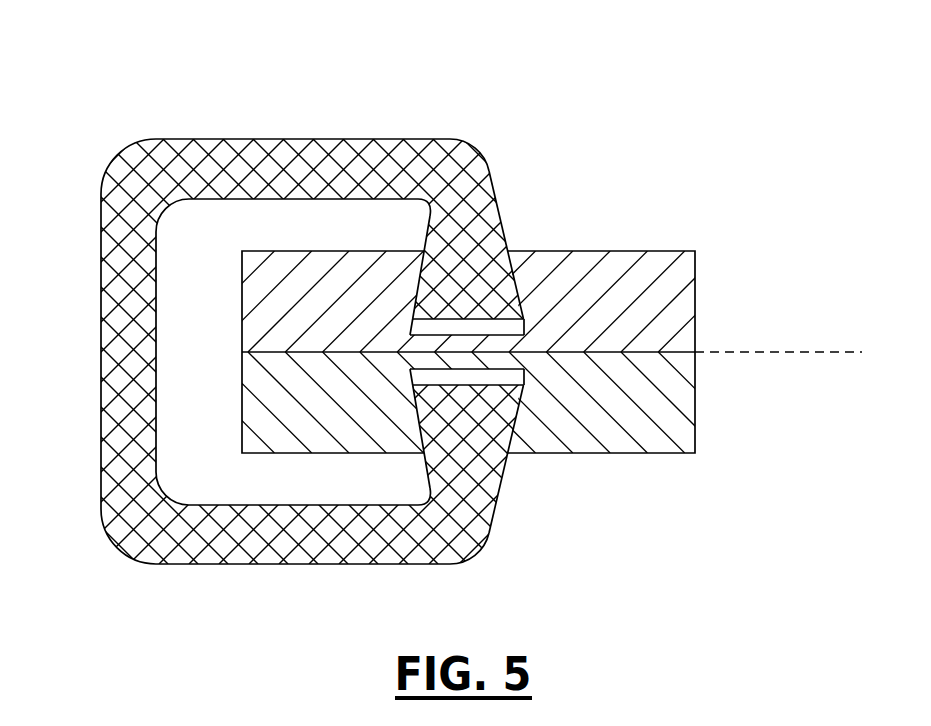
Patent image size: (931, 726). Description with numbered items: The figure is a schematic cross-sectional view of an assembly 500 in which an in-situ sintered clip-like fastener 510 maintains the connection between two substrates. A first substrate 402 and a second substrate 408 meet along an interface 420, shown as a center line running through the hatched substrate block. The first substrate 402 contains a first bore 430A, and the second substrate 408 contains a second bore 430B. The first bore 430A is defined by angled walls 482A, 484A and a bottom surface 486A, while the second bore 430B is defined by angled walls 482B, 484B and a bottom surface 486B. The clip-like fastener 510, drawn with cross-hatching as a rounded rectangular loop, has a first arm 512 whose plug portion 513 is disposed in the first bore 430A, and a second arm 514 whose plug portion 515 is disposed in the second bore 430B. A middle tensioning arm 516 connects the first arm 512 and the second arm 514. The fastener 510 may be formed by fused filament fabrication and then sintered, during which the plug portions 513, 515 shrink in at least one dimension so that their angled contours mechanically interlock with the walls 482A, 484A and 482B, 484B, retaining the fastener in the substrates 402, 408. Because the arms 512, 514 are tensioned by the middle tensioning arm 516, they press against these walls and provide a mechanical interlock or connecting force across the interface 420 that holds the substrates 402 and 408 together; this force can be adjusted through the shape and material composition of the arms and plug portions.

The assembly 500 is at (116, 74).
The clip-like fastener 510 is at (86, 376).
The first arm 512 is at (238, 137).
The second arm 514 is at (262, 552).
The middle tensioning arm 516 is at (120, 463).
The plug portion 513 is at (462, 270).
The plug portion 515 is at (498, 445).
The angled wall 482A is at (420, 295).
The angled wall 482B is at (423, 407).
The first substrate 402 is at (683, 277).
The second substrate 408 is at (683, 420).
The interface 420 is at (830, 347).
The first bore 430A is at (523, 337).
The second bore 430B is at (498, 378).
The angled wall 484A is at (512, 327).
The angled wall 484B is at (505, 387).
The bottom surface 486A is at (478, 338).
The bottom surface 486B is at (490, 372).